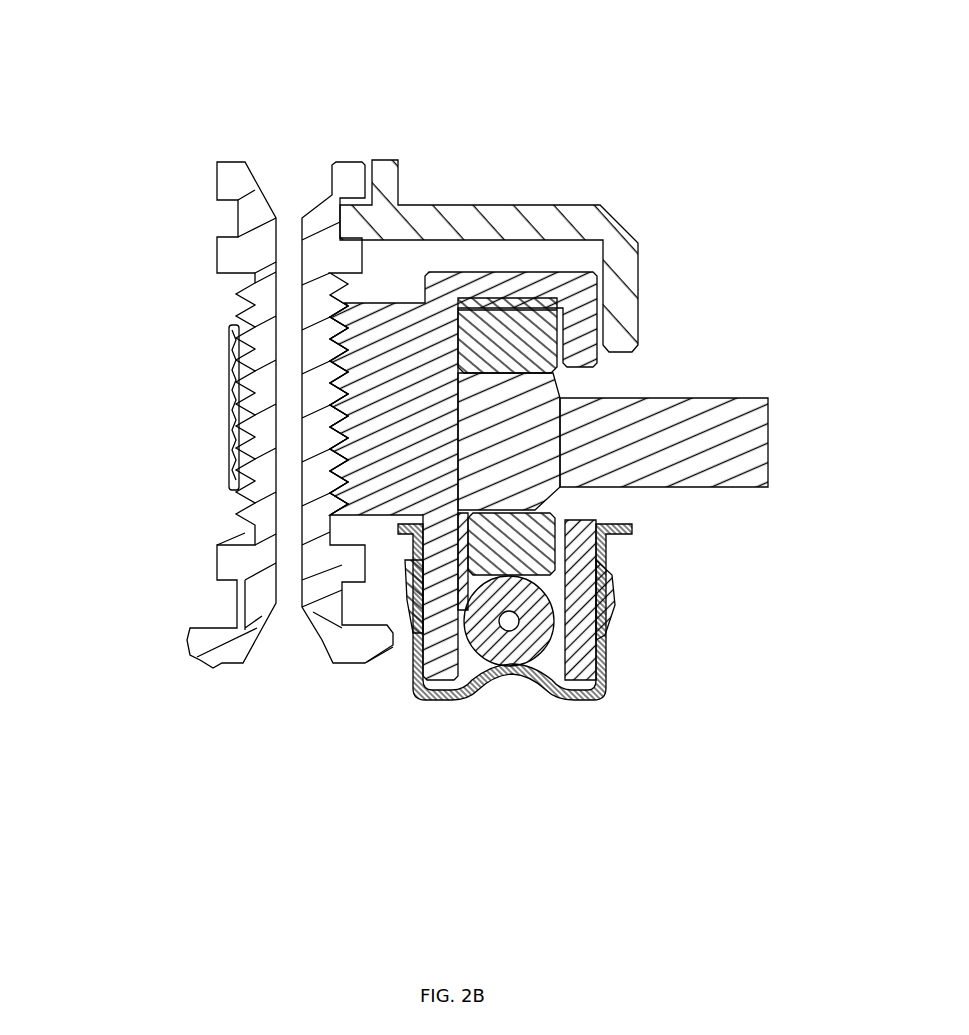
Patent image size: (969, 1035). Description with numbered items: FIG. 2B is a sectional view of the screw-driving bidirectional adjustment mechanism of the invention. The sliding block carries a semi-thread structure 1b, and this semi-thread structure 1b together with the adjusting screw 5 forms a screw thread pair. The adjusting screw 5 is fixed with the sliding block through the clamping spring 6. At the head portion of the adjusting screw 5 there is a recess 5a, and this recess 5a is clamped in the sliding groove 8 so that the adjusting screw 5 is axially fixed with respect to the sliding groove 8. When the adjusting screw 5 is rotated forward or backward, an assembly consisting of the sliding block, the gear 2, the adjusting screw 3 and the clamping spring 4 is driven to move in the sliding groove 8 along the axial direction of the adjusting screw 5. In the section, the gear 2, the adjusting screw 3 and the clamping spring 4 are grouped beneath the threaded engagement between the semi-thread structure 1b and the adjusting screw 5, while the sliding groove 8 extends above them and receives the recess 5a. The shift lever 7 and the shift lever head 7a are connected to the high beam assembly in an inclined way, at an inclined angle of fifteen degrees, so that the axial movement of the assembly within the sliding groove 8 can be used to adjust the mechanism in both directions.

The semi-thread structure 1b is at (336, 455).
The gear 2 is at (537, 552).
The adjusting screw 3 is at (537, 615).
The clamping spring 4 is at (537, 680).
The adjusting screw 5 is at (332, 193).
The recess 5a is at (237, 215).
The clamping spring 6 is at (235, 385).
The shift lever 7 is at (755, 452).
The shift lever head 7a is at (540, 422).
The sliding groove 8 is at (587, 243).